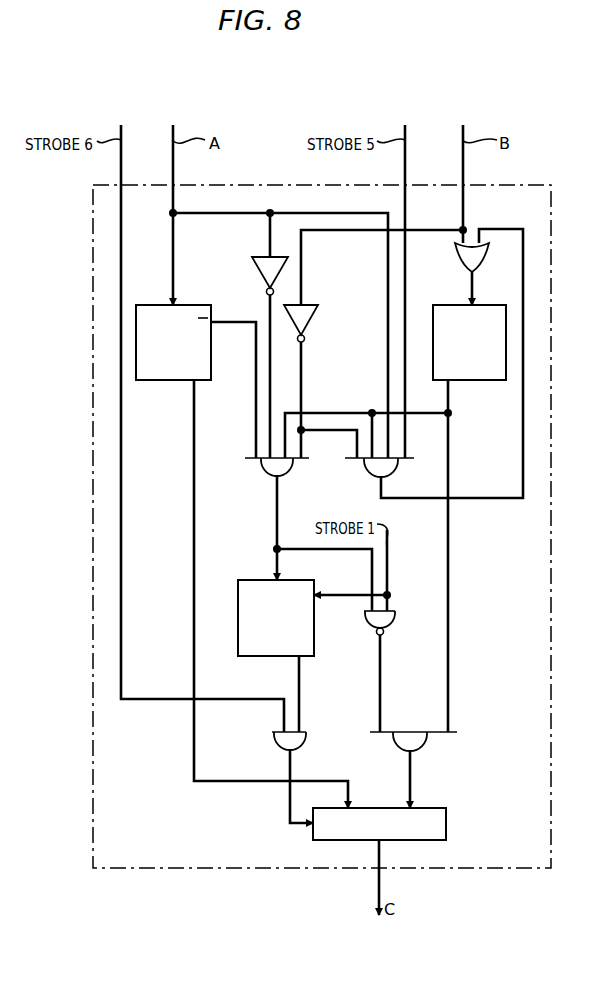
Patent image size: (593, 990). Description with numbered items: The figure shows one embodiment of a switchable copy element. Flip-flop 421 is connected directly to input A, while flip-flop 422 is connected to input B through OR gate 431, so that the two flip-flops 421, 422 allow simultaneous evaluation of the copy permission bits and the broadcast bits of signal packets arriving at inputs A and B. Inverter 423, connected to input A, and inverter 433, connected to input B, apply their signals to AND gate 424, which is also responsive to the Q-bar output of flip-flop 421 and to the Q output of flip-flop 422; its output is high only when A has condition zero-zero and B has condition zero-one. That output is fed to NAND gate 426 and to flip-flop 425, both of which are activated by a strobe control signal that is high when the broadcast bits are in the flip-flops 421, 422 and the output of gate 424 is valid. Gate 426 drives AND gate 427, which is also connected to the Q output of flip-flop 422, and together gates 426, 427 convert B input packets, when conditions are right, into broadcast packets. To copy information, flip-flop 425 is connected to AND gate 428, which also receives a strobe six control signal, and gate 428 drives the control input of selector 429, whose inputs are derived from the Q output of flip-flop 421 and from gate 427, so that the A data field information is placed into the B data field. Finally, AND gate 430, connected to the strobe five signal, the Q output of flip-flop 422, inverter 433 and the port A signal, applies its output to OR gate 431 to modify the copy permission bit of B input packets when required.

The flip-flop 421 is at (192, 302).
The flip-flop 422 is at (486, 302).
The inverter 423 is at (256, 357).
The AND gate 424 is at (331, 466).
The flip-flop 425 is at (293, 581).
The NAND gate 426 is at (364, 631).
The AND gate 427 is at (413, 770).
The AND gate 428 is at (299, 739).
The selector 429 is at (428, 808).
The AND gate 430 is at (396, 556).
The OR gate 431 is at (452, 363).
The inverter 433 is at (310, 381).